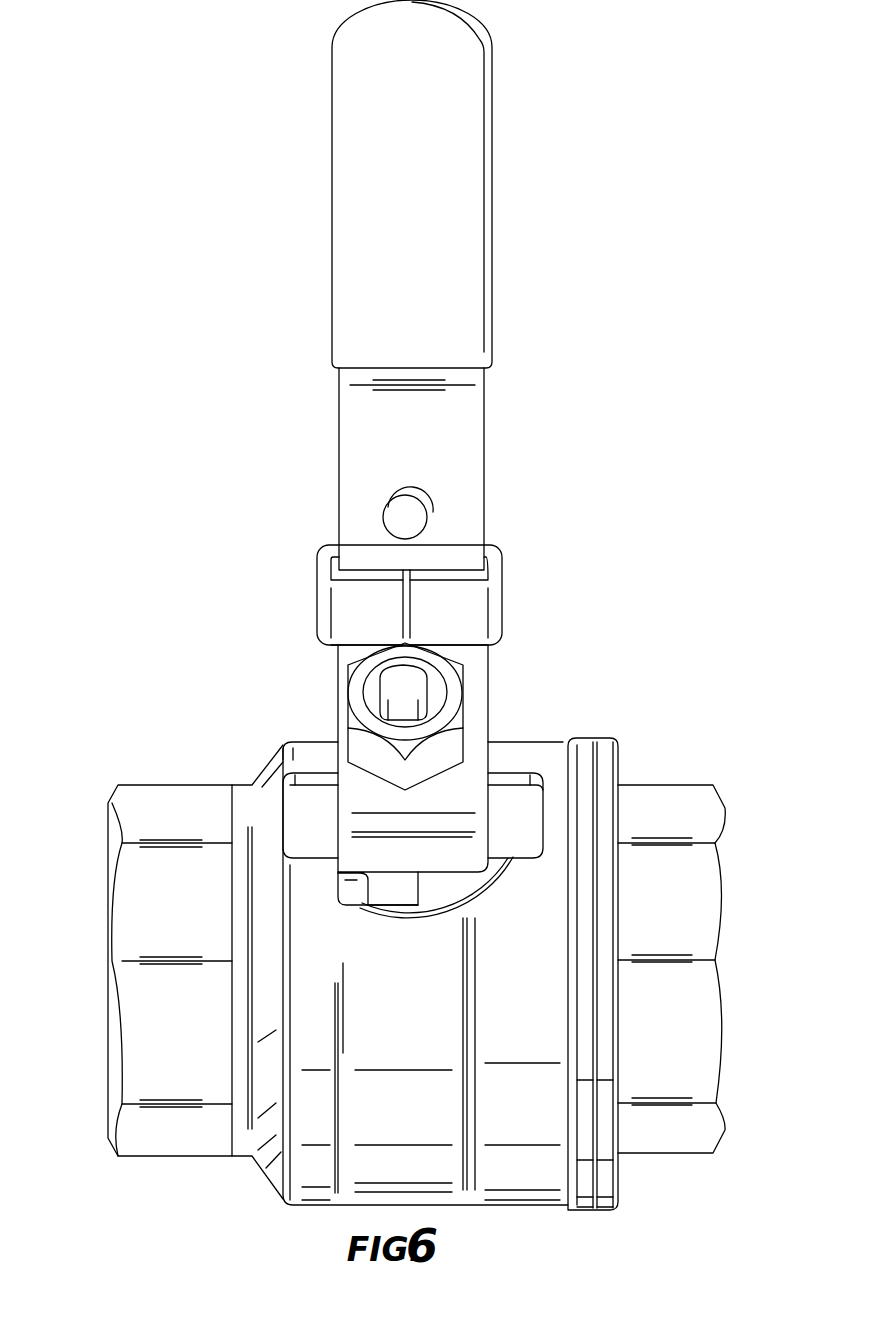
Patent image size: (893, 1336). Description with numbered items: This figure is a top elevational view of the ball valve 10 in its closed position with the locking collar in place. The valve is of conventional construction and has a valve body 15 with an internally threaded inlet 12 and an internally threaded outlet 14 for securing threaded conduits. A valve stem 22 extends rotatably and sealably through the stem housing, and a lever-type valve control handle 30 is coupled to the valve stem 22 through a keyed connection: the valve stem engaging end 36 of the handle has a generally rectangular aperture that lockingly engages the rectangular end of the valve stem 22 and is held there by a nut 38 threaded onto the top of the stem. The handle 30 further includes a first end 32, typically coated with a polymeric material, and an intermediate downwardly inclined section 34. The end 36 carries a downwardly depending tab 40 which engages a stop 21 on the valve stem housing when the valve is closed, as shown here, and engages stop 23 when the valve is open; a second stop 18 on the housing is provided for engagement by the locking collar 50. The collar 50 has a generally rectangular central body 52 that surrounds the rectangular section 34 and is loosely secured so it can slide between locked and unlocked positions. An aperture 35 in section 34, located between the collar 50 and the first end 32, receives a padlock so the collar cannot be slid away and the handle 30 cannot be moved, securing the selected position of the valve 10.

The ball valve 10 is at (257, 1209).
The internally threaded inlet 12 is at (683, 817).
The internally threaded outlet 14 is at (110, 905).
The valve body 15 is at (453, 995).
The stop 18 is at (257, 785).
The stop 21 is at (348, 895).
The valve stem 22 is at (408, 680).
The stop 23 is at (520, 777).
The valve control handle 30 is at (301, 220).
The first end 32 is at (331, 120).
The intermediate downwardly inclined section 34 is at (338, 417).
The aperture 35 is at (383, 519).
The valve stem engaging end 36 is at (358, 782).
The nut 38 is at (337, 692).
The tab 40 is at (400, 890).
The locking collar 50 is at (309, 607).
The central body 52 is at (362, 628).